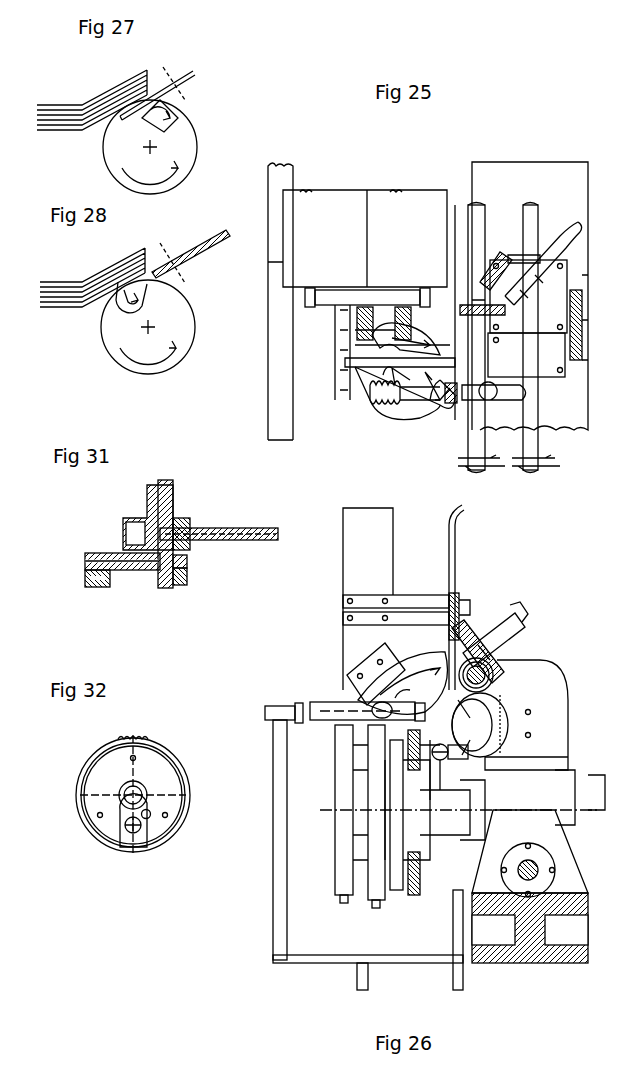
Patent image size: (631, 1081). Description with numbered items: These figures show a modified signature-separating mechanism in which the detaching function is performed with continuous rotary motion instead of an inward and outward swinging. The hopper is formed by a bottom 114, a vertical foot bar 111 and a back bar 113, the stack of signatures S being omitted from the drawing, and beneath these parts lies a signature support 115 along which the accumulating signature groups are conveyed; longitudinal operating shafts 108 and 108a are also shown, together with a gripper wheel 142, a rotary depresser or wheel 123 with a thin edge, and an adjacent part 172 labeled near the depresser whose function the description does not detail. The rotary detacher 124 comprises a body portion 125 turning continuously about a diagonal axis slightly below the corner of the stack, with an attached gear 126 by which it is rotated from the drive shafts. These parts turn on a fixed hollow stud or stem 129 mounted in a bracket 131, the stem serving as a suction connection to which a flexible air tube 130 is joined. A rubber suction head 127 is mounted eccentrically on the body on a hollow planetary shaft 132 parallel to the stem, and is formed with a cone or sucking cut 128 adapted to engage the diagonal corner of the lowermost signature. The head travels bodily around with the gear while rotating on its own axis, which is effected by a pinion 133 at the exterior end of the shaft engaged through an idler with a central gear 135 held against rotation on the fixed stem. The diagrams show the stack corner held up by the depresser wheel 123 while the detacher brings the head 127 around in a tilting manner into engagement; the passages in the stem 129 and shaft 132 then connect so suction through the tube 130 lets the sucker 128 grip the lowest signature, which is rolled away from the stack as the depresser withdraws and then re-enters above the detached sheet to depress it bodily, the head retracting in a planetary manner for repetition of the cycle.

In FIG. 27, the stack of sheets S is at (92, 100).
In FIG. 25, the longitudinal operating shaft 108 is at (545, 466).
In FIG. 26, the longitudinal operating shaft 108 is at (530, 862).
In FIG. 25, the longitudinal operating shaft 108a is at (468, 464).
In FIG. 26, the longitudinal operating shaft 108a is at (493, 676).
In FIG. 25, the vertical foot bar 111 is at (345, 347).
In FIG. 26, the vertical foot bar 111 is at (368, 599).
In FIG. 26, the back bar 113 is at (449, 534).
In FIG. 25, the hopper bottom 114 is at (365, 238).
In FIG. 26, the hopper bottom 114 is at (288, 703).
In FIG. 26, the signature support 115 is at (332, 965).
In FIG. 27, the rotary depresser wheel 123 is at (193, 78).
In FIG. 28, the rotary depresser wheel 123 is at (198, 256).
In FIG. 25, the rotary depresser wheel 123 is at (374, 427).
In FIG. 26, the rotary depresser wheel 123 is at (408, 662).
In FIG. 27, the rotary detacher 124 is at (103, 156).
In FIG. 31, the rotary detacher 124 is at (112, 506).
In FIG. 26, the rotary detacher 124 is at (500, 710).
In FIG. 27, the detaching wheel body 125 is at (211, 168).
In FIG. 28, the detaching wheel body 125 is at (195, 336).
In FIG. 31, the detaching wheel body 125 is at (150, 503).
In FIG. 32, the detaching wheel body 125 is at (100, 773).
In FIG. 31, the gear 126 is at (170, 483).
In FIG. 32, the gear 126 is at (97, 752).
In FIG. 27, the suction head 127 is at (180, 122).
In FIG. 28, the suction head 127 is at (152, 304).
In FIG. 31, the suction head 127 is at (88, 553).
In FIG. 32, the suction head 127 is at (124, 850).
In FIG. 26, the suction head 127 is at (437, 745).
In FIG. 31, the sucker 128 is at (92, 590).
In FIG. 31, the fixed hollow stem 129 is at (219, 524).
In FIG. 32, the fixed hollow stem 129 is at (137, 787).
In FIG. 25, the flexible air tube 130 is at (560, 230).
In FIG. 25, the bracket 131 is at (540, 290).
In FIG. 31, the eccentric planetary shaft 132 is at (188, 562).
In FIG. 32, the eccentric planetary shaft 132 is at (142, 826).
In FIG. 26, the eccentric planetary shaft 132 is at (620, 580).
In FIG. 31, the pinion 133 is at (187, 580).
In FIG. 31, the central gear 135 is at (186, 520).
In FIG. 26, the gripper wheel 142 is at (368, 903).
In FIG. 25, the pivot hub 172 is at (443, 410).
In FIG. 26, the pivot hub 172 is at (440, 626).